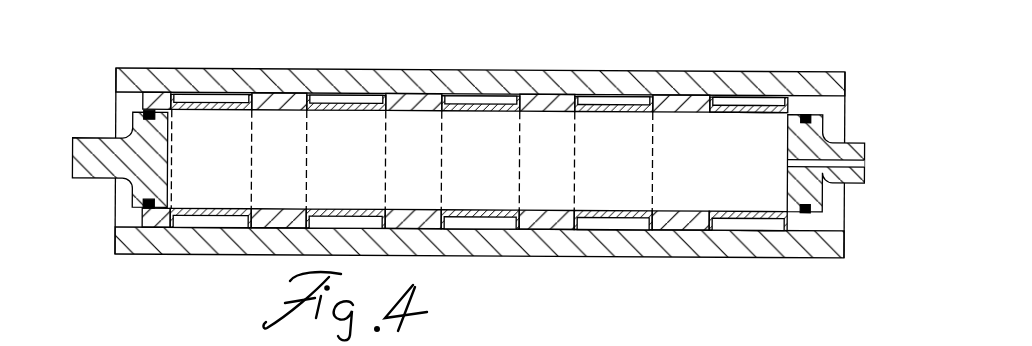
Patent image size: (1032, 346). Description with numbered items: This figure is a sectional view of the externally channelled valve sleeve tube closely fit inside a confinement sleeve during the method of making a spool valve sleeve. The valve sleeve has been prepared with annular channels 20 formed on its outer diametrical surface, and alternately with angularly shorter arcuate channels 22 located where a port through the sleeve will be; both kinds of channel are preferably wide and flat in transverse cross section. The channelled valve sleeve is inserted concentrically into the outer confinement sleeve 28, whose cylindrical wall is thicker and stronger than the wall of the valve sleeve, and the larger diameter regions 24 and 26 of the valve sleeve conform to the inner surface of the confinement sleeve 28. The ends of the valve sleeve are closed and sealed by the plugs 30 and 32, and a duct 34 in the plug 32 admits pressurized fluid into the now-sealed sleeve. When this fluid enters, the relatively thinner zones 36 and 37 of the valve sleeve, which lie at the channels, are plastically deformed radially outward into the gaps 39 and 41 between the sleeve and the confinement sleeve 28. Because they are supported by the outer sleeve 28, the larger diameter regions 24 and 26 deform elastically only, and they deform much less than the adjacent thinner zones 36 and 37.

The annular channels 20 is at (458, 100).
The arcuate channels 22 is at (727, 100).
The larger diameter regions 24 is at (147, 92).
The larger diameter regions 26 is at (733, 243).
The outer confinement sleeve 28 is at (173, 68).
The plug 30 is at (80, 148).
The plug 32 is at (823, 126).
The duct 34 is at (852, 155).
The thinner zones 36 is at (487, 110).
The thinner zones 37 is at (750, 110).
The gaps 39 is at (212, 93).
The gaps 41 is at (770, 102).